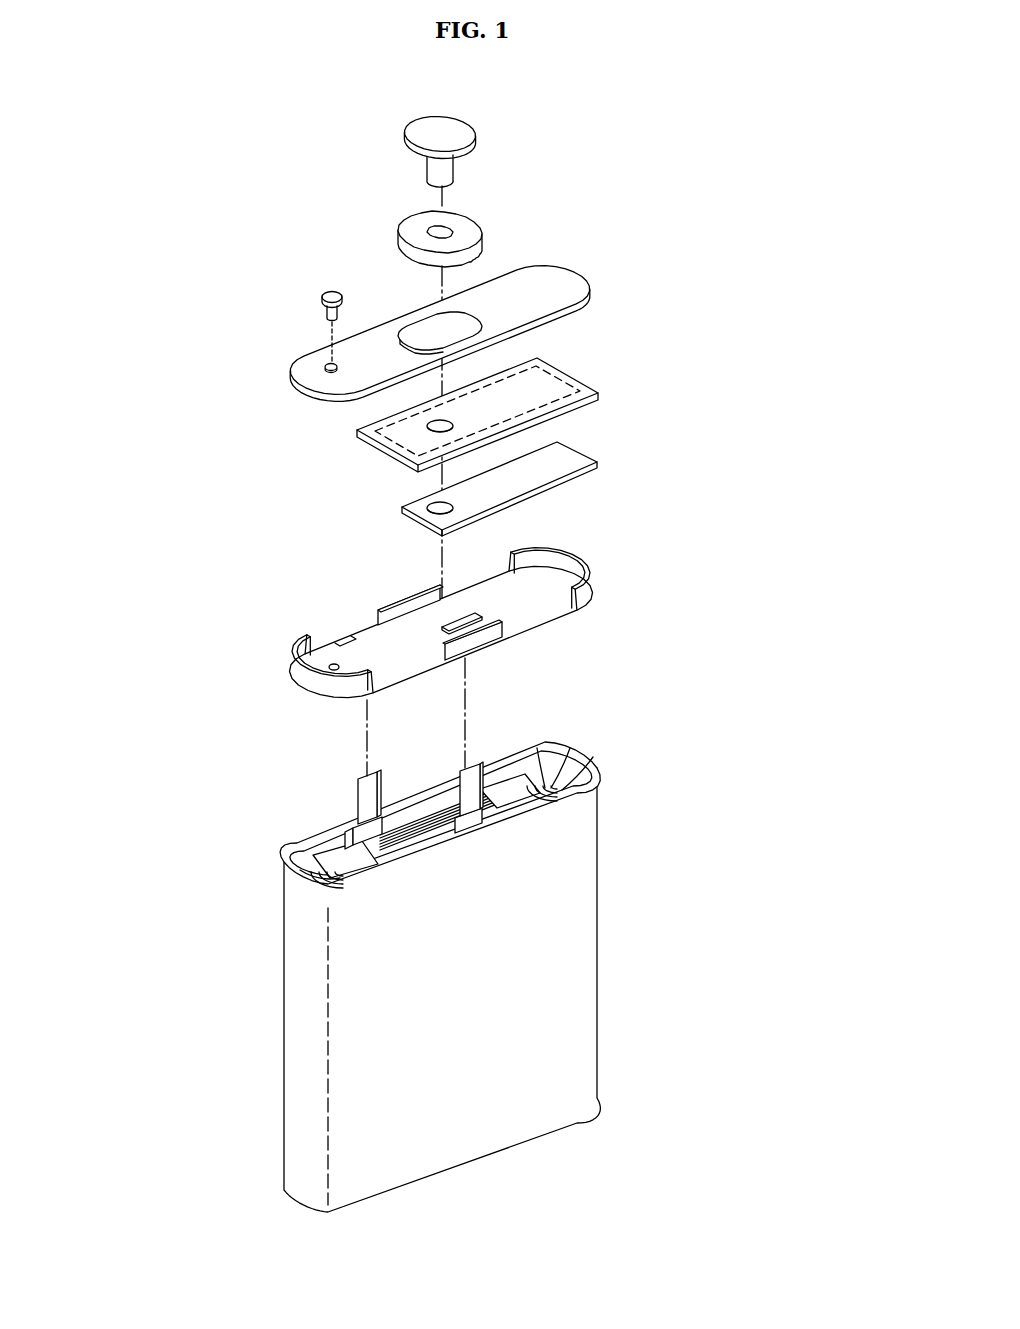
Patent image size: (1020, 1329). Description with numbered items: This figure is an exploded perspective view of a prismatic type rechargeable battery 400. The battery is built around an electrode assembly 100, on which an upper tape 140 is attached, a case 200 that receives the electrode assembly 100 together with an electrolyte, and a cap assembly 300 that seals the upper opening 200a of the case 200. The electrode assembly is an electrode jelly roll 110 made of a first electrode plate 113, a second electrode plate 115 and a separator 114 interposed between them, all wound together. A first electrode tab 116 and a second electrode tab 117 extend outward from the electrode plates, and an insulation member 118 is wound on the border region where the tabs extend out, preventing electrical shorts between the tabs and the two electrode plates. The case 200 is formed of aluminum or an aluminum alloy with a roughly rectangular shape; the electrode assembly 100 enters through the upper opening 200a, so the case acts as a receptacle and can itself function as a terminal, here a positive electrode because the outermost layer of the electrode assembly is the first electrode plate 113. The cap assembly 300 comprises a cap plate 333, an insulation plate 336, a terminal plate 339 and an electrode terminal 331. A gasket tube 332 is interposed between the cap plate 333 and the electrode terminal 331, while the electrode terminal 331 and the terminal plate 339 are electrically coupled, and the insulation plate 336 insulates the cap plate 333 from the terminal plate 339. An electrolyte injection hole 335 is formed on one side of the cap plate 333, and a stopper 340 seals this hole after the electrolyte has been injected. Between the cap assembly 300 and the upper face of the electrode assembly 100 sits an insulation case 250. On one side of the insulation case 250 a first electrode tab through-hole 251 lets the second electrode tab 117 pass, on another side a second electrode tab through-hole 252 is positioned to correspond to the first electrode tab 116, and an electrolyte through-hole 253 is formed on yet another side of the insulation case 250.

The rechargeable battery 400 is at (233, 111).
The electrode assembly 100 is at (645, 675).
The electrode jelly roll 110 is at (627, 737).
The first electrode plate 113 is at (575, 782).
The separator 114 is at (557, 779).
The second electrode plate 115 is at (543, 775).
The first electrode tab 116 is at (368, 783).
The second electrode tab 117 is at (472, 783).
The insulation member 118 is at (368, 828).
The upper tape 140 is at (304, 880).
The case 200 is at (606, 938).
The upper opening 200a is at (292, 852).
The insulation case 250 is at (295, 676).
The first electrode tab through-hole 251 is at (474, 612).
The second electrode tab through-hole 252 is at (346, 636).
The electrolyte through-hole 253 is at (327, 672).
The cap assembly 300 is at (680, 135).
The electrode terminal 331 is at (447, 132).
The gasket tube 332 is at (416, 228).
The cap plate 333 is at (560, 280).
The electrolyte injection hole 335 is at (328, 364).
The insulation plate 336 is at (574, 378).
The terminal plate 339 is at (572, 452).
The stopper 340 is at (332, 291).